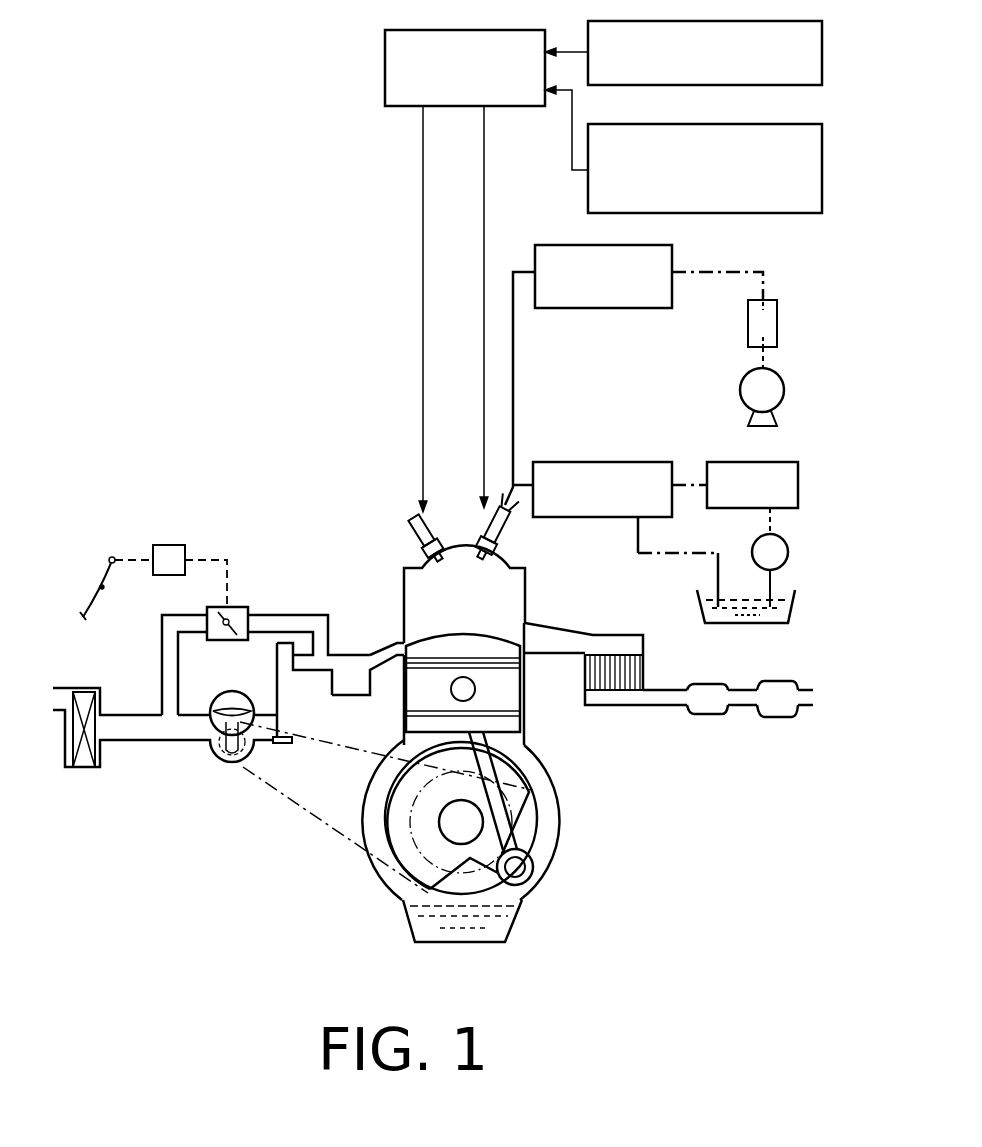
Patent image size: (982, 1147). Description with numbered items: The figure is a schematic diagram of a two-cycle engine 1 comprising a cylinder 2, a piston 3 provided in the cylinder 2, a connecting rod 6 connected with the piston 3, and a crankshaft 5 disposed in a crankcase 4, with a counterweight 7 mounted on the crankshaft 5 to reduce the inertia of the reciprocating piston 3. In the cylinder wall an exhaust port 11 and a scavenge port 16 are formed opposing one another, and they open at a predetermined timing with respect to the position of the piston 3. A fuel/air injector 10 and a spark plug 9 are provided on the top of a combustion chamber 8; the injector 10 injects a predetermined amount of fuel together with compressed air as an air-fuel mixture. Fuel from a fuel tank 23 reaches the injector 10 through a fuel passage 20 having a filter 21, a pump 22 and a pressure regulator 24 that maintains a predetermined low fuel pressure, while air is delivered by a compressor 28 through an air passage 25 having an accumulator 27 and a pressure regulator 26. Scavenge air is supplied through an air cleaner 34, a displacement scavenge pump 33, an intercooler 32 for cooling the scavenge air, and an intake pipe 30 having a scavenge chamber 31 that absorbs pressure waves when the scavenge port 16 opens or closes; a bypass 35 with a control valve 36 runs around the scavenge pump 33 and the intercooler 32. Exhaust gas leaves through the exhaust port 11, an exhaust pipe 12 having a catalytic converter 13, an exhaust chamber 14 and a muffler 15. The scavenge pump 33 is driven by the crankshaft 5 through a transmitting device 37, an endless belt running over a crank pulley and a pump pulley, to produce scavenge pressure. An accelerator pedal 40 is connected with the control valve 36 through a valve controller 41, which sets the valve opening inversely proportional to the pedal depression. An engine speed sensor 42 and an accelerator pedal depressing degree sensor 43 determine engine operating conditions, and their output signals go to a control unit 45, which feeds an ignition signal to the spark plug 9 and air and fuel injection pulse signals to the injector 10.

The two-cycle engine 1 is at (573, 805).
The cylinder 2 is at (418, 592).
The piston 3 is at (510, 700).
The crankcase 4 is at (383, 780).
The crankshaft 5 is at (466, 802).
The connecting rod 6 is at (504, 834).
The counterweight 7 is at (392, 810).
The combustion chamber 8 is at (428, 558).
The spark plug 9 is at (426, 535).
The fuel/air injector 10 is at (496, 528).
The exhaust port 11 is at (538, 632).
The exhaust pipe 12 is at (648, 707).
The catalytic converter 13 is at (642, 670).
The exhaust chamber 14 is at (708, 719).
The muffler 15 is at (780, 722).
The scavenge port 16 is at (398, 647).
The fuel passage 20 is at (518, 478).
The filter 21 is at (732, 460).
The pump 22 is at (788, 555).
The fuel tank 23 is at (698, 602).
The pressure regulator 24 is at (662, 460).
The air passage 25 is at (513, 383).
The pressure regulator 26 is at (608, 308).
The accumulator 27 is at (748, 330).
The compressor 28 is at (740, 393).
The intake pipe 30 is at (316, 673).
The scavenge chamber 31 is at (345, 700).
The intercooler 32 is at (282, 744).
The displacement scavenge pump 33 is at (206, 755).
The air cleaner 34 is at (97, 771).
The bypass 35 is at (320, 609).
The control valve 36 is at (224, 640).
The transmitting device 37 is at (302, 802).
The accelerator pedal 40 is at (84, 623).
The valve controller 41 is at (192, 538).
The engine speed sensor 42 is at (774, 20).
The accelerator pedal depressing degree sensor 43 is at (780, 126).
The control unit 45 is at (536, 30).